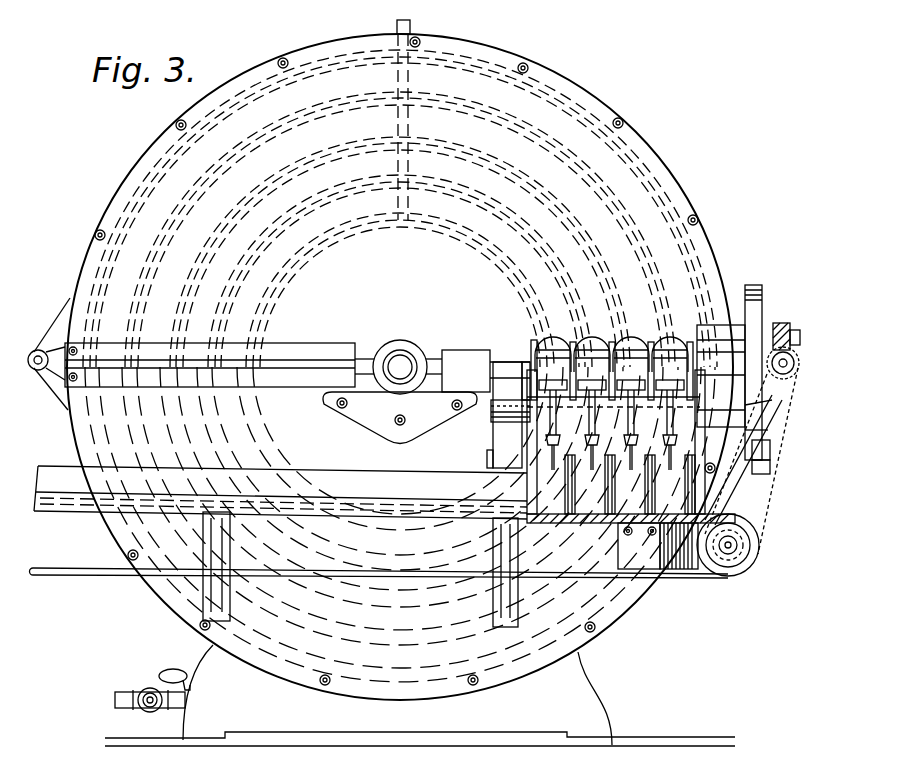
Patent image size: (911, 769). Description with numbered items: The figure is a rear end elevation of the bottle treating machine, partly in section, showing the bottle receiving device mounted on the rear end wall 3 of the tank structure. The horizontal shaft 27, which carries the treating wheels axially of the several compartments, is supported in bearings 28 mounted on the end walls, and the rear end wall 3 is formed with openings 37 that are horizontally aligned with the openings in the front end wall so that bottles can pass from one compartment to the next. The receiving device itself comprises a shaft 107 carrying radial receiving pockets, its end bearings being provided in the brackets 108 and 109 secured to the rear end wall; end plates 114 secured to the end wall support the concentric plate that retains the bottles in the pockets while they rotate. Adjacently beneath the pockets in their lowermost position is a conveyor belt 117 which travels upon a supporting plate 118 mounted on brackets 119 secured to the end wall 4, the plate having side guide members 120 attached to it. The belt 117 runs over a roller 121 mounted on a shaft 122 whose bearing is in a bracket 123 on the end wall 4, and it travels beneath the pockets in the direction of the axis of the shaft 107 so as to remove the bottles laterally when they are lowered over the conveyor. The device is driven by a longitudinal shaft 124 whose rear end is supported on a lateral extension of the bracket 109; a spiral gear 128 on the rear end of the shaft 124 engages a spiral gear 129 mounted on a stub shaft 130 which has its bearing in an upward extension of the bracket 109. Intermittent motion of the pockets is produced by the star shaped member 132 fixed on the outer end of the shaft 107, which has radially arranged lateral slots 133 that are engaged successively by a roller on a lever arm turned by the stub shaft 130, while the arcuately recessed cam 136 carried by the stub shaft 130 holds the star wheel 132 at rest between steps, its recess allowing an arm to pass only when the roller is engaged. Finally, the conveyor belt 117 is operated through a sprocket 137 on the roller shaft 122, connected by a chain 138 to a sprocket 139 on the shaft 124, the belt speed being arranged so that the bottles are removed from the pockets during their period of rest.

The rear end wall 3 is at (165, 137).
The end wall 4 is at (157, 585).
The horizontal shaft 27 is at (400, 360).
The bearings 28 is at (393, 390).
The openings 37 is at (535, 336).
The end plates 114 is at (530, 342).
The shaft 107 is at (507, 428).
The bracket 108 is at (502, 443).
The bracket 109 is at (722, 456).
The conveyor belt 117 is at (601, 566).
The supporting plate 118 is at (580, 588).
The brackets 119 is at (232, 616).
The side guide members 120 is at (335, 478).
The roller 121 is at (757, 572).
The shaft 122 is at (729, 558).
The bracket 123 is at (684, 566).
The shaft 124 is at (793, 382).
The spiral gear 128 is at (796, 352).
The spiral gear 129 is at (782, 323).
The stub shaft 130 is at (711, 359).
The star shaped member 132 is at (772, 470).
The lateral slots 133 is at (772, 450).
The arcuately recessed cam 136 is at (749, 286).
The sprocket 137 is at (762, 531).
The chain 138 is at (770, 406).
The sprocket 139 is at (771, 431).